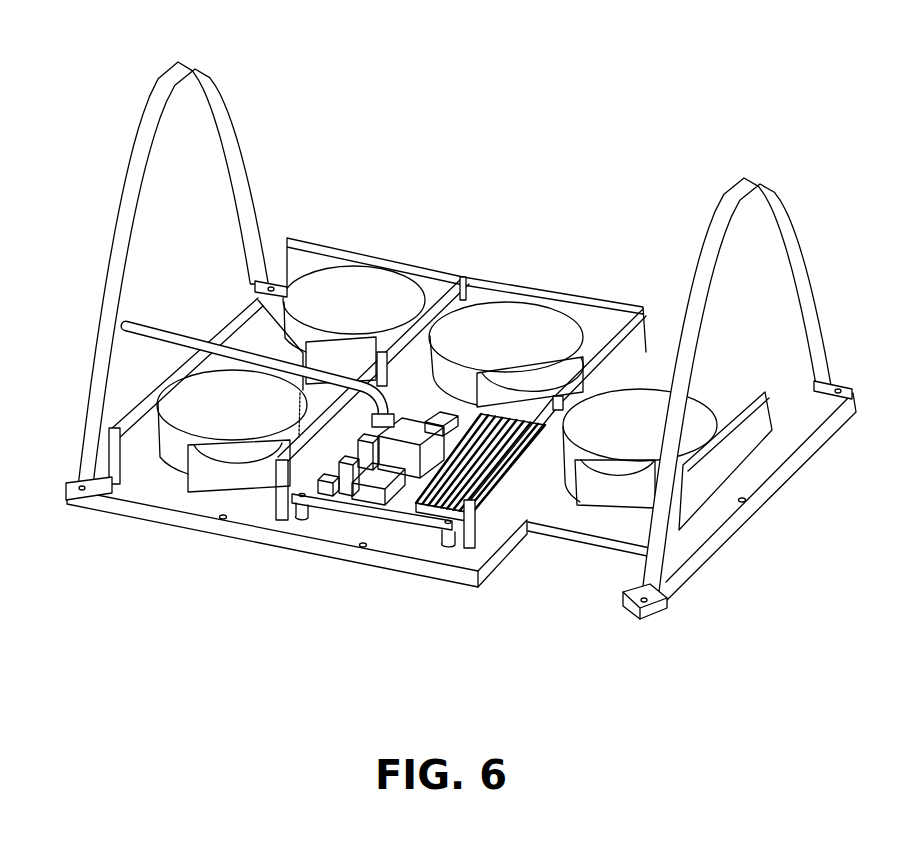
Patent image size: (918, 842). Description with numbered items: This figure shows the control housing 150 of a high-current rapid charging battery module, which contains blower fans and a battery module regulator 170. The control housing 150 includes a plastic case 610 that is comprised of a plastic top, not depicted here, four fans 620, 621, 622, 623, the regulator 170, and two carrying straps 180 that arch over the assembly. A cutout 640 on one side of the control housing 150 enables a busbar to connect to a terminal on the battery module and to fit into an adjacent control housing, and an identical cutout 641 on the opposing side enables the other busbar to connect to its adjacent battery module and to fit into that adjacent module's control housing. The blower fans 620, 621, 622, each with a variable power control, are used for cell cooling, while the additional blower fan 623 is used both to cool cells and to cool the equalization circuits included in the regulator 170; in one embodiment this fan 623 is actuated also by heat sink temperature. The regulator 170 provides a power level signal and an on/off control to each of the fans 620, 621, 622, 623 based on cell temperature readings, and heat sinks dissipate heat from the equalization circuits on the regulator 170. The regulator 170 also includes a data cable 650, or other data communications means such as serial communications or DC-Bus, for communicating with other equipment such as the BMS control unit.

The control housing 150 is at (441, 333).
The carrying straps 180 is at (215, 95).
The plastic case 610 is at (152, 475).
The blower fan 620 is at (258, 418).
The blower fan 621 is at (356, 290).
The blower fan 622 is at (617, 403).
The additional blower fan 623 is at (505, 320).
The cutout 640 is at (573, 553).
The cutout 641 is at (712, 395).
The data cable 650 is at (153, 323).
The battery module regulator 170 is at (342, 498).